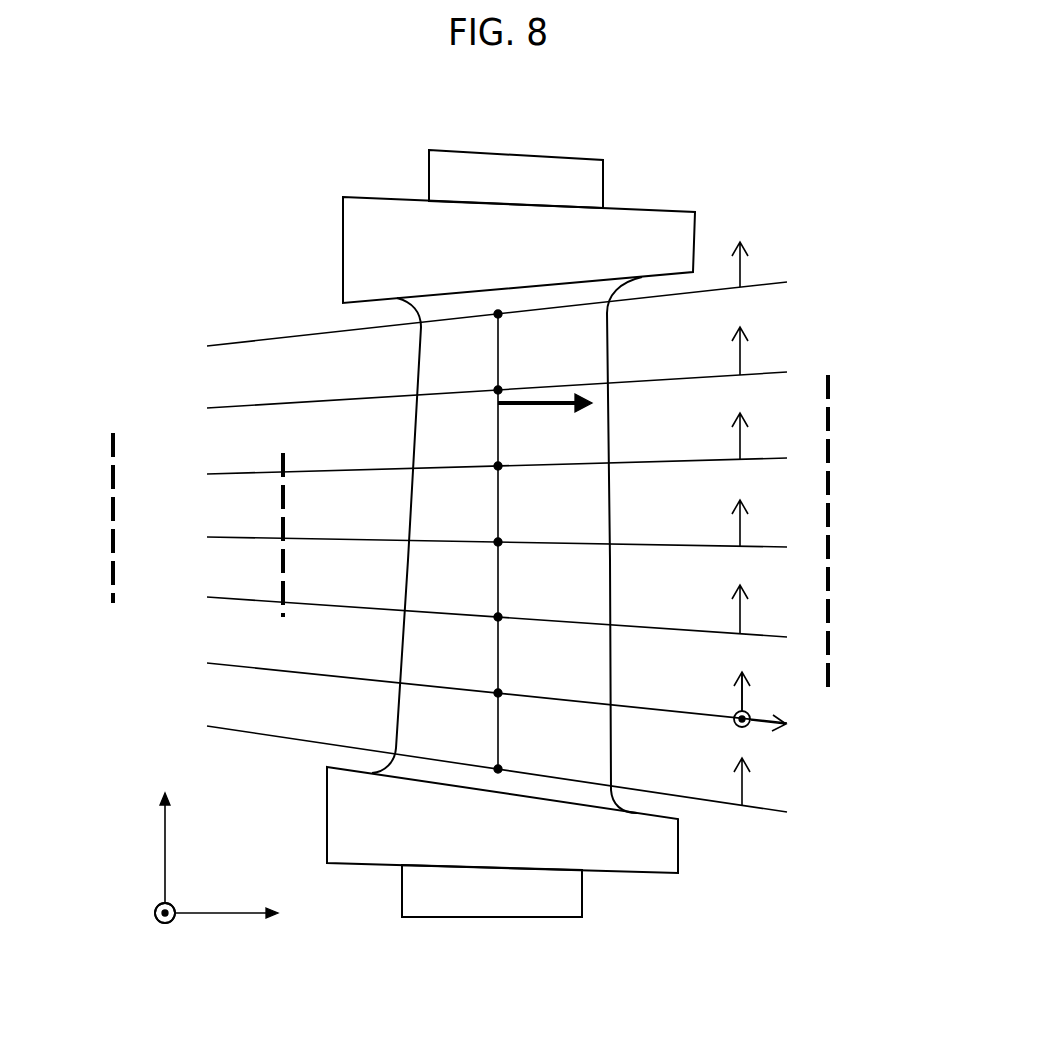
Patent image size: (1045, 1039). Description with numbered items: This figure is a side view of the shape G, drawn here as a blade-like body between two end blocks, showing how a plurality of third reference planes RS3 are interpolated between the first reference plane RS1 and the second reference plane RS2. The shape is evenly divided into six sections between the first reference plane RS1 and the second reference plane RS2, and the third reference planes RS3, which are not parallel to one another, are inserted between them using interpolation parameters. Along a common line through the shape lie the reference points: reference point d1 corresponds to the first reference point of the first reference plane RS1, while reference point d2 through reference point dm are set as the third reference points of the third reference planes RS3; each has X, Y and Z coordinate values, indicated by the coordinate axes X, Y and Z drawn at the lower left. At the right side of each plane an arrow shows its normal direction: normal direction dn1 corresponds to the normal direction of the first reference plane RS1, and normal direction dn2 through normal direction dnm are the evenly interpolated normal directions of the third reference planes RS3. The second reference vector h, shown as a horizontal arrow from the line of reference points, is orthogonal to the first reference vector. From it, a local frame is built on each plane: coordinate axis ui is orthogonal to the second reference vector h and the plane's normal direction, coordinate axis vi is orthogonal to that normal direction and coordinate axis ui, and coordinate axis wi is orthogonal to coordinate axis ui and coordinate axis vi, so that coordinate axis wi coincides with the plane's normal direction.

The first reference plane RS1 is at (237, 726).
The second reference plane RS2 is at (247, 343).
The third reference planes RS3 is at (243, 408).
The reference point d1 is at (498, 769).
The reference point d2 is at (498, 693).
The reference point dm is at (498, 392).
The second reference vector h is at (532, 400).
The normal direction dn1 is at (747, 788).
The normal direction dn2 is at (744, 701).
The normal direction dnm is at (740, 355).
The coordinate axis wi is at (741, 701).
The coordinate axis ui is at (736, 727).
The coordinate axis vi is at (765, 712).
The X coordinate axis X is at (175, 904).
The Y coordinate axis Y is at (248, 912).
The Z coordinate axis Z is at (167, 823).